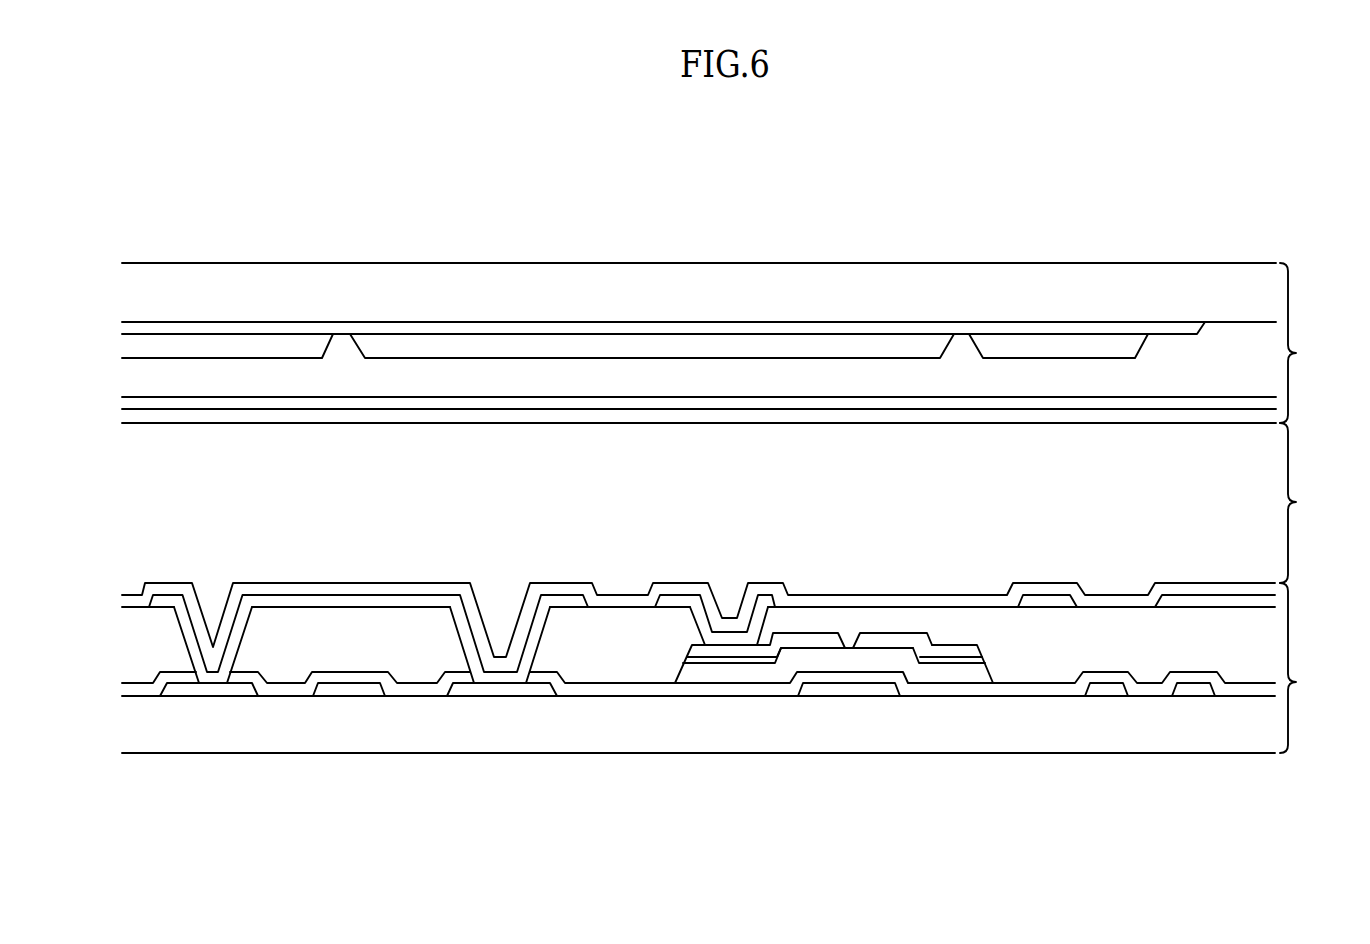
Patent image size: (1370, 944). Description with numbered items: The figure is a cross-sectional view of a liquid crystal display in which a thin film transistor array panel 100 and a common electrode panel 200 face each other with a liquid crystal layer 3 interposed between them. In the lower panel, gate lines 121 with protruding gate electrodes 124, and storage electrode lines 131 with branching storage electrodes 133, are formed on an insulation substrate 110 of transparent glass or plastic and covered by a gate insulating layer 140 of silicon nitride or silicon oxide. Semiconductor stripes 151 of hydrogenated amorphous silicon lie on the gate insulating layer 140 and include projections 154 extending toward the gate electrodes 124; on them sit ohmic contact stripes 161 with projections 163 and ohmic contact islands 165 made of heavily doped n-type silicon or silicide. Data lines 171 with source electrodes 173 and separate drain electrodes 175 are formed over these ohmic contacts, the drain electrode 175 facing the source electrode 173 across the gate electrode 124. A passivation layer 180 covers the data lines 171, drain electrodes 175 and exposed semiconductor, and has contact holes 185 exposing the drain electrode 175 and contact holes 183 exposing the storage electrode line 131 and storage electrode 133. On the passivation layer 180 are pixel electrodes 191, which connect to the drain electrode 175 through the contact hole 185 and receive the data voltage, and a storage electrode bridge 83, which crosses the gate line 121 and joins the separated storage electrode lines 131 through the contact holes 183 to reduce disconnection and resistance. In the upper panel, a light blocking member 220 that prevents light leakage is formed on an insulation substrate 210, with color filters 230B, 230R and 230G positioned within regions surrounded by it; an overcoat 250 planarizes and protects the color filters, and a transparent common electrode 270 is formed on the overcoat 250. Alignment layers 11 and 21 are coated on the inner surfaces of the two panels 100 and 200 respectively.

The liquid crystal layer 3 is at (1300, 503).
The alignment layer 11 is at (405, 584).
The alignment layer 21 is at (878, 418).
The storage electrode bridge 83 is at (340, 600).
The thin film transistor array panel 100 is at (1311, 668).
The insulation substrate 110 is at (290, 732).
The gate line 121 is at (353, 688).
The gate electrode 124 is at (838, 688).
The storage electrode line 131 is at (212, 685).
The storage electrode 133 is at (498, 687).
The gate insulating layer 140 is at (593, 692).
The semiconductor stripe 151 is at (982, 678).
The projection 154 is at (822, 665).
The ohmic contact stripe 161 is at (965, 660).
The projection 163 is at (878, 650).
The ohmic contact island 165 is at (753, 662).
The data line 171 is at (945, 653).
The source electrode 173 is at (905, 638).
The drain electrode 175 is at (712, 650).
The passivation layer 180 is at (1048, 668).
The contact hole 183 is at (245, 623).
The contact hole 185 is at (762, 620).
The pixel electrode 191 is at (672, 602).
The common electrode panel 200 is at (1311, 343).
The insulation substrate 210 is at (724, 283).
The light blocking member 220 is at (630, 328).
The blue color filter 230B is at (203, 340).
The red color filter 230R is at (481, 347).
The green color filter 230G is at (1060, 345).
The overcoat 250 is at (292, 378).
The common electrode 270 is at (793, 405).